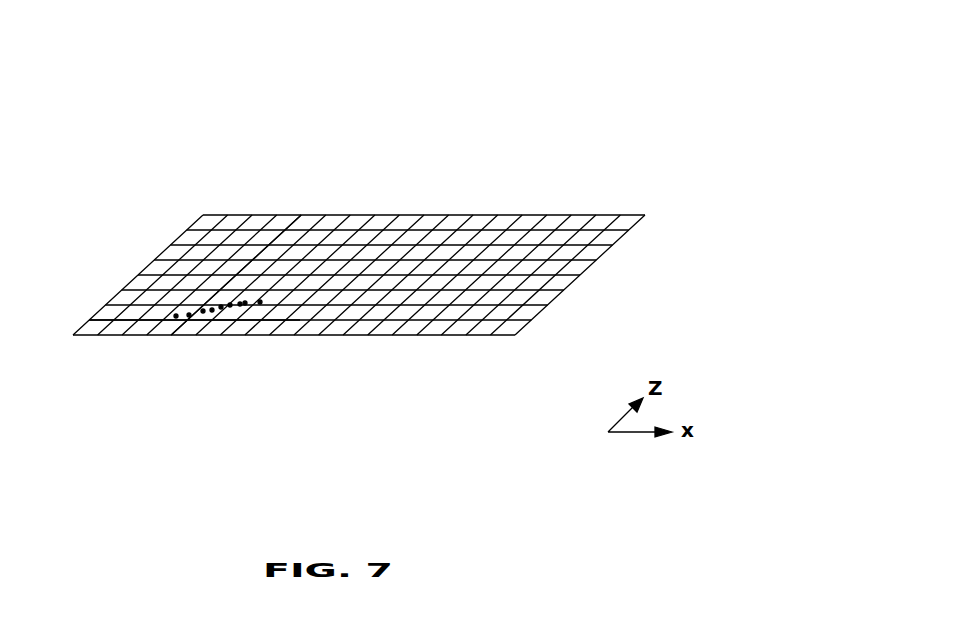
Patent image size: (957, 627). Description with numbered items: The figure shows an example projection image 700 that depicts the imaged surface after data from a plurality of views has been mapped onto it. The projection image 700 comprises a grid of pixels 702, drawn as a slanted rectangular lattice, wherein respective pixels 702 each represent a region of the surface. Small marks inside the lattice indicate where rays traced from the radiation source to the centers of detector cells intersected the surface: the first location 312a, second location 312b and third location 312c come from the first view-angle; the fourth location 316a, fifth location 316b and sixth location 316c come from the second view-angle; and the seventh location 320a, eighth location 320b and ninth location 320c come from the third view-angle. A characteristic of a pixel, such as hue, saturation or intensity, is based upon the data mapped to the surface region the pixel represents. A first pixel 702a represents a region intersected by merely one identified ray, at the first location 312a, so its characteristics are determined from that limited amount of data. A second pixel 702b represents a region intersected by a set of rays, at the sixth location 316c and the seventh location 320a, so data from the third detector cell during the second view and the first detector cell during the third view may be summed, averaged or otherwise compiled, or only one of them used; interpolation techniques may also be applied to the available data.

The projection image 700 is at (601, 78).
The pixels 702 is at (343, 228).
The first pixel 702a is at (175, 317).
The second pixel 702b is at (192, 335).
The first location 312a is at (177, 317).
The second location 312b is at (189, 315).
The third location 312c is at (203, 311).
The fourth location 316a is at (212, 310).
The fifth location 316b is at (221, 307).
The sixth location 316c is at (230, 305).
The seventh location 320a is at (240, 304).
The eighth location 320b is at (245, 303).
The ninth location 320c is at (260, 302).